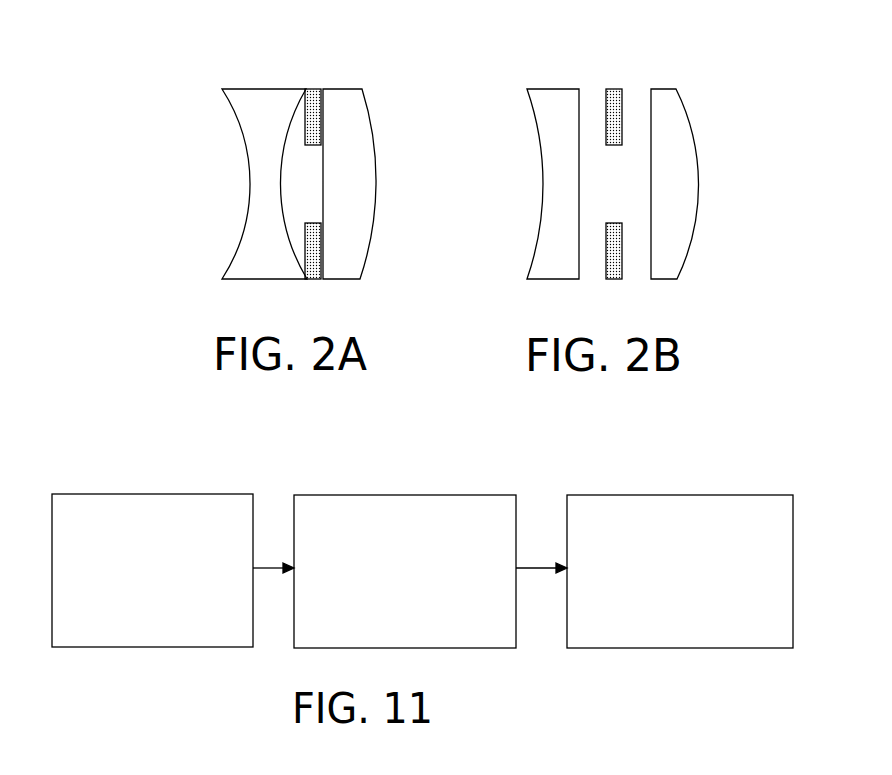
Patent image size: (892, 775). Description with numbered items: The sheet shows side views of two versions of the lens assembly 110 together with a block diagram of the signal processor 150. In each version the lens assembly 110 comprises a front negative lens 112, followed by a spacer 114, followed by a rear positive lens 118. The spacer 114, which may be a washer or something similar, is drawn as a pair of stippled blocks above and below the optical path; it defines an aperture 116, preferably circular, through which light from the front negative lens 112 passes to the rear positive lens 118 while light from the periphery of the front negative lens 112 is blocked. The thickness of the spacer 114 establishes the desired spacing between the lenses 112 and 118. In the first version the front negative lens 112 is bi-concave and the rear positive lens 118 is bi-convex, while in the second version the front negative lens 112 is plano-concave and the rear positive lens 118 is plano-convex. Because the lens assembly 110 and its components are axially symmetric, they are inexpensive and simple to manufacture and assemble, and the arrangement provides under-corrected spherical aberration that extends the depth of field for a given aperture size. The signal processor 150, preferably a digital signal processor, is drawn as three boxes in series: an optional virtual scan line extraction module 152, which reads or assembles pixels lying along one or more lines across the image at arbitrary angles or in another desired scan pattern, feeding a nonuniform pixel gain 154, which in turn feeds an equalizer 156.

In FIG. 2A, the lens assembly 110 is at (498, 118).
In FIG. 2A, the front negative lens 112 is at (267, 108).
In FIG. 2B, the front negative lens 112 is at (557, 98).
In FIG. 2A, the spacer 114 is at (315, 97).
In FIG. 2B, the spacer 114 is at (615, 88).
In FIG. 2A, the aperture 116 is at (310, 181).
In FIG. 2B, the aperture 116 is at (610, 183).
In FIG. 2A, the rear positive lens 118 is at (345, 108).
In FIG. 2B, the rear positive lens 118 is at (668, 97).
In FIG. 11, the signal processor 150 is at (627, 482).
In FIG. 11, the virtual scan line extraction module 152 is at (131, 633).
In FIG. 11, the nonuniform pixel gain 154 is at (382, 606).
In FIG. 11, the equalizer 156 is at (649, 599).